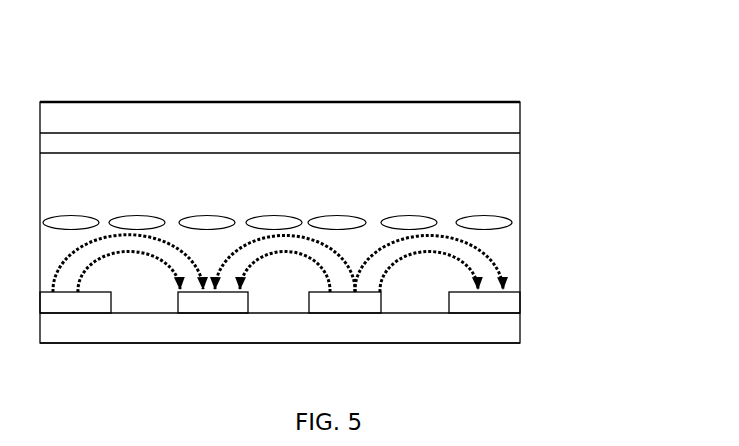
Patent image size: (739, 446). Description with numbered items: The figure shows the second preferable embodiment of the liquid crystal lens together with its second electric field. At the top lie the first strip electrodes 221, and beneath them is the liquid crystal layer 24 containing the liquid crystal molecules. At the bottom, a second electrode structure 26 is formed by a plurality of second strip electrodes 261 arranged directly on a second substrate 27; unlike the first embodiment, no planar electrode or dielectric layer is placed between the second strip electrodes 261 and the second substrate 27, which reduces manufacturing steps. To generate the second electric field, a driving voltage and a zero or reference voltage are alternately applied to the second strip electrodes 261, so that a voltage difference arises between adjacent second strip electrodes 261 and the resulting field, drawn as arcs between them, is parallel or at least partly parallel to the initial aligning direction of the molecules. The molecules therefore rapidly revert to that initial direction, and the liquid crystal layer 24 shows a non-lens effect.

The first strip electrodes 221 is at (348, 148).
The liquid crystal layer 24 is at (502, 180).
The second strip electrodes 261 is at (507, 293).
The second electrode structure 26 is at (530, 306).
The second substrate 27 is at (482, 334).